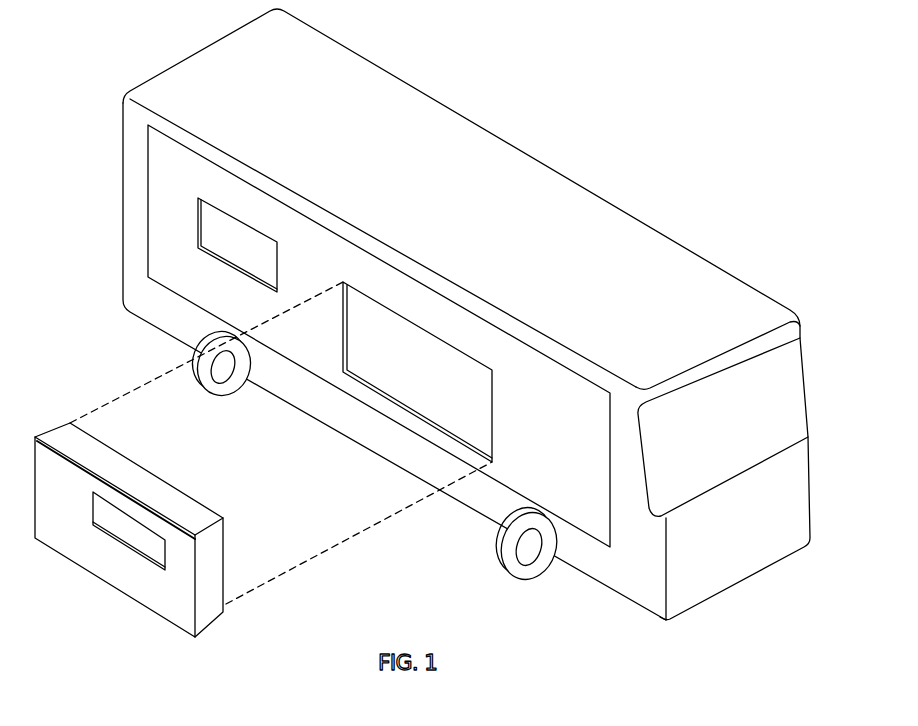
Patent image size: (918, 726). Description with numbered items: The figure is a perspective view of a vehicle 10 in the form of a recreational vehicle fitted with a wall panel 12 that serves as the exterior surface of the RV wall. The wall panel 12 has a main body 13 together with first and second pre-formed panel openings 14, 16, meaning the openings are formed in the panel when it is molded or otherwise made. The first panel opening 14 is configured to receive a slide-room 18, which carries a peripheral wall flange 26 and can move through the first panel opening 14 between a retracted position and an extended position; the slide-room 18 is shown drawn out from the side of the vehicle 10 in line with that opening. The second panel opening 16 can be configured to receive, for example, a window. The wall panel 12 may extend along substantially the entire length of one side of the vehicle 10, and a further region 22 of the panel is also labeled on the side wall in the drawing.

The vehicle 10 is at (466, 314).
The wall panel 12 is at (517, 340).
The main body 13 is at (303, 242).
The first panel opening 14 is at (415, 325).
The second panel opening 16 is at (233, 216).
The slide-room 18 is at (150, 451).
The side panel 22 is at (557, 408).
The peripheral wall flange 26 is at (197, 573).